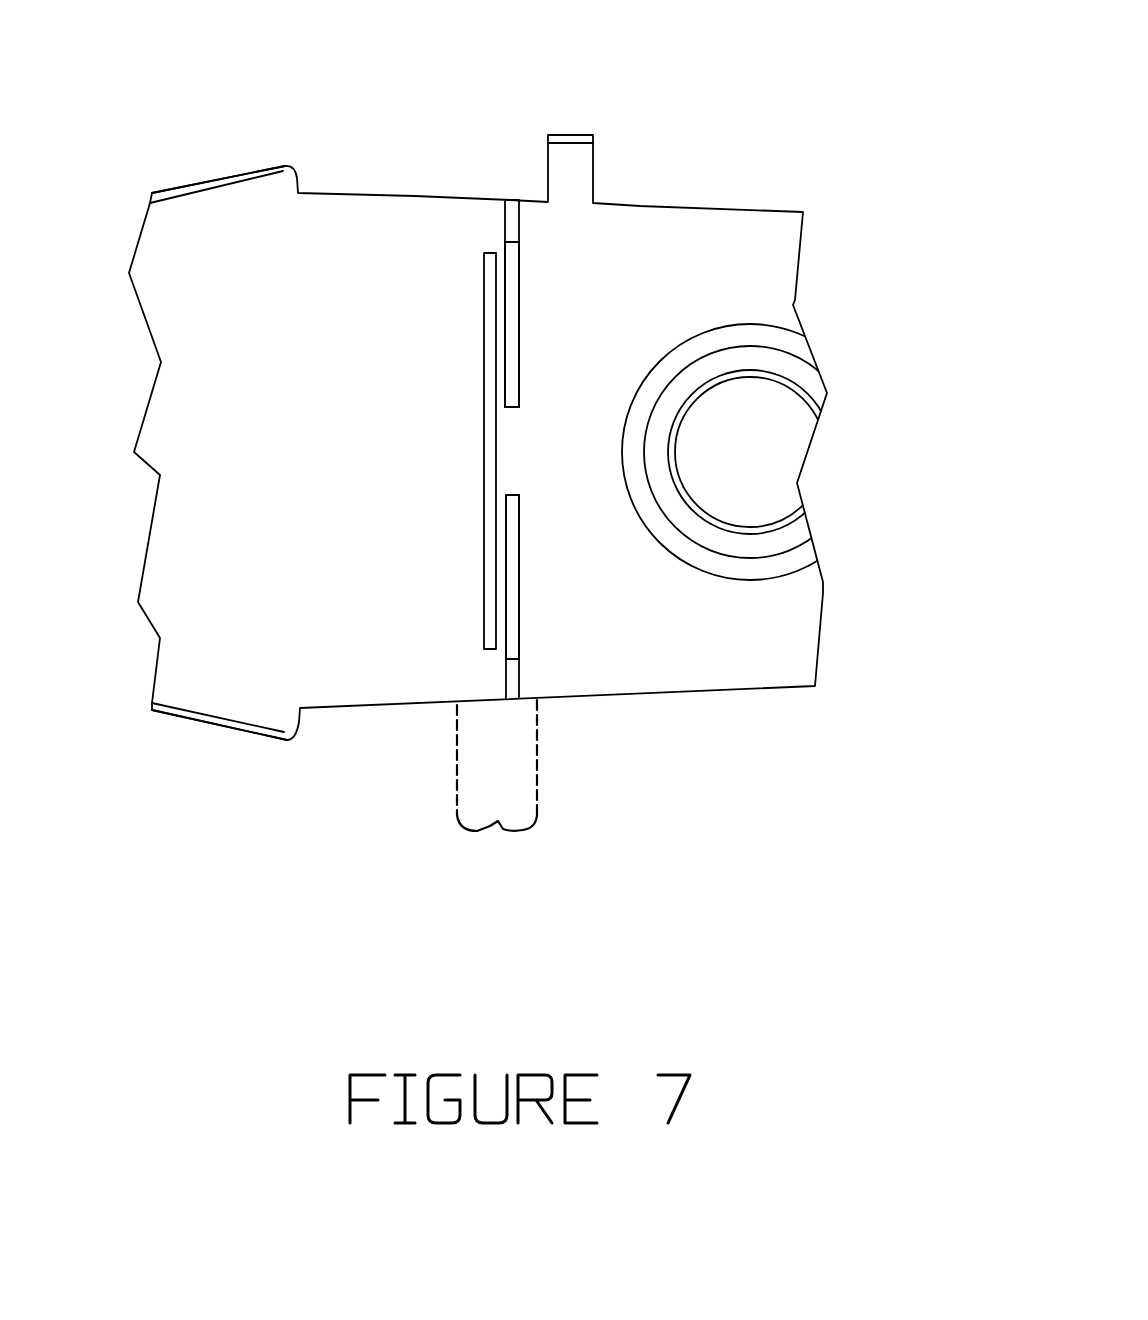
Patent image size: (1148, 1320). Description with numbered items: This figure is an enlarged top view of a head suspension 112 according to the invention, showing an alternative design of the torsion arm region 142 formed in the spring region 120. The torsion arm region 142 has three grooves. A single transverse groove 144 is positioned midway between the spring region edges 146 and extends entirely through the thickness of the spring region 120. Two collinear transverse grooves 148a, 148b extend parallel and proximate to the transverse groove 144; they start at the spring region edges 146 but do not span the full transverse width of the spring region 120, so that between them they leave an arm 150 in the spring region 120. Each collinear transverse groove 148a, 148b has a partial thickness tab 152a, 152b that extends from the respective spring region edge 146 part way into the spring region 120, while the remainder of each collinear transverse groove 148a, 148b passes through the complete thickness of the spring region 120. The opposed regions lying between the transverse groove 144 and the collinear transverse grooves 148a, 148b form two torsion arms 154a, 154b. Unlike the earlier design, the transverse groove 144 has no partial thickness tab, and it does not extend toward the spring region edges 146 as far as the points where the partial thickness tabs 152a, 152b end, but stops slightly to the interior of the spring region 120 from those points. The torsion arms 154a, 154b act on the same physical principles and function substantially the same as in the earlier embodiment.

The head suspension 112 is at (707, 867).
The spring region 120 is at (345, 270).
The torsion arm region 142 is at (497, 781).
The single transverse groove 144 is at (488, 423).
The spring region edges 146 is at (415, 196).
The collinear transverse groove 148a is at (510, 200).
The collinear transverse groove 148b is at (513, 700).
The arm 150 is at (512, 453).
The partial thickness tab 152a is at (513, 230).
The partial thickness tab 152b is at (513, 668).
The torsion arm 154a is at (498, 310).
The torsion arm 154b is at (502, 603).